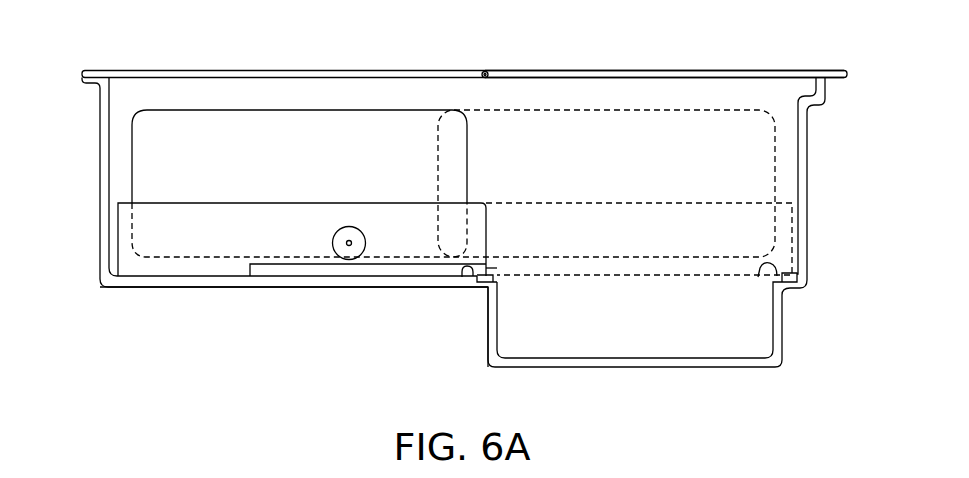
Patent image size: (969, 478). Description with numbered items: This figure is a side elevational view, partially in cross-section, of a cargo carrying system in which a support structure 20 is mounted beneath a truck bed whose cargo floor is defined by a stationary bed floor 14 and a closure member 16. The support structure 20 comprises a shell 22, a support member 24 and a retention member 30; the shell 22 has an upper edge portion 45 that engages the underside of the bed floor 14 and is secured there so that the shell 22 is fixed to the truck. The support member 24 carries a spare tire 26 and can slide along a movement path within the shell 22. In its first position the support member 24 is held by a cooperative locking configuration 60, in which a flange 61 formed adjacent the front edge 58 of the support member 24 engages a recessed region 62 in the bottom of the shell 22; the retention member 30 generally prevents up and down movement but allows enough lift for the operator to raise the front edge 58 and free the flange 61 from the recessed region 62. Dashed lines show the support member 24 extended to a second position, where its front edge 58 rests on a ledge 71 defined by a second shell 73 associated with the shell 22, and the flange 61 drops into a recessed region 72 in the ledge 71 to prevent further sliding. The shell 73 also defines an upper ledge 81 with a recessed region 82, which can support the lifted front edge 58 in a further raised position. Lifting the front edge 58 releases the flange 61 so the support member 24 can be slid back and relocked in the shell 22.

The bed floor 14 is at (293, 70).
The closure member 16 is at (636, 70).
The support structure 20 is at (262, 318).
The shell 22 is at (88, 174).
The support member 24 is at (398, 241).
The spare tire 26 is at (280, 150).
The retention member 30 is at (333, 243).
The upper edge portion 45 is at (95, 82).
The front edge 58 is at (487, 232).
The cooperative locking configuration 60 is at (500, 267).
The flange 61 is at (494, 281).
The recessed region 62 is at (462, 277).
The ledge 71 is at (761, 270).
The recessed region 72 is at (800, 277).
The shell 73 is at (822, 171).
The ledge 81 is at (805, 104).
The recessed region 82 is at (822, 86).